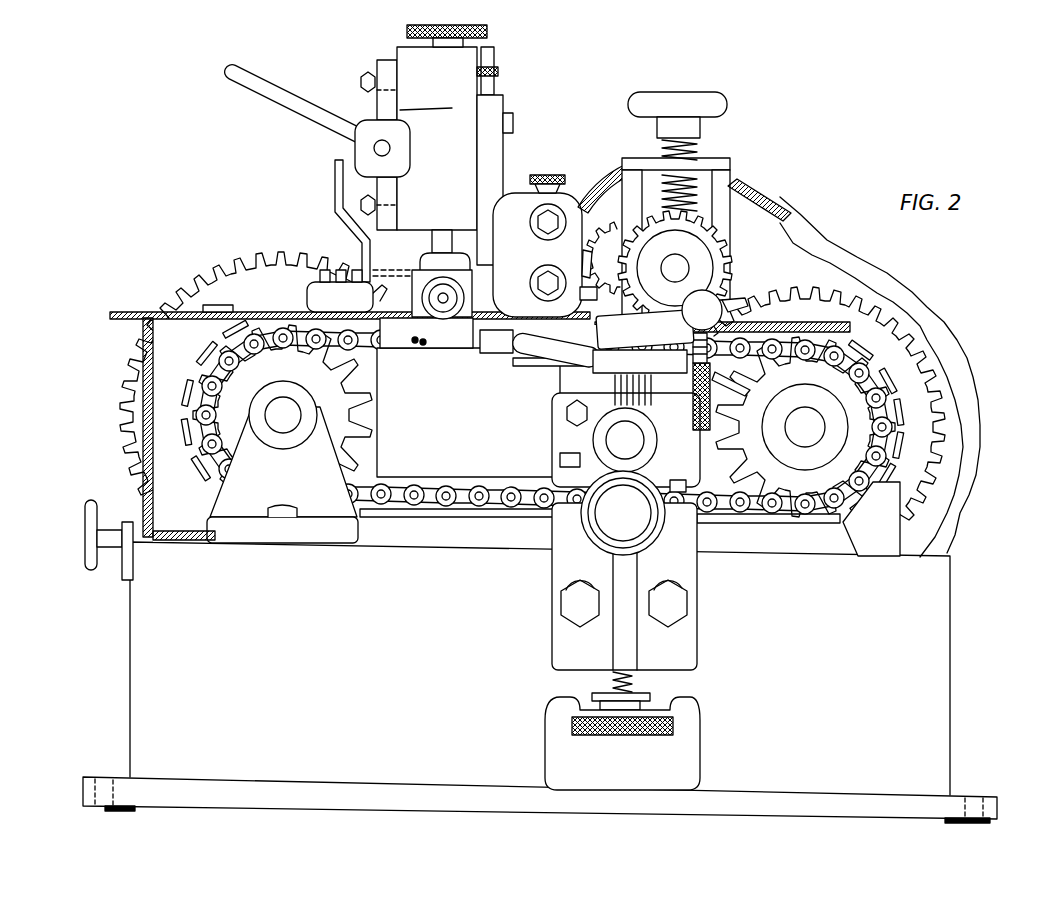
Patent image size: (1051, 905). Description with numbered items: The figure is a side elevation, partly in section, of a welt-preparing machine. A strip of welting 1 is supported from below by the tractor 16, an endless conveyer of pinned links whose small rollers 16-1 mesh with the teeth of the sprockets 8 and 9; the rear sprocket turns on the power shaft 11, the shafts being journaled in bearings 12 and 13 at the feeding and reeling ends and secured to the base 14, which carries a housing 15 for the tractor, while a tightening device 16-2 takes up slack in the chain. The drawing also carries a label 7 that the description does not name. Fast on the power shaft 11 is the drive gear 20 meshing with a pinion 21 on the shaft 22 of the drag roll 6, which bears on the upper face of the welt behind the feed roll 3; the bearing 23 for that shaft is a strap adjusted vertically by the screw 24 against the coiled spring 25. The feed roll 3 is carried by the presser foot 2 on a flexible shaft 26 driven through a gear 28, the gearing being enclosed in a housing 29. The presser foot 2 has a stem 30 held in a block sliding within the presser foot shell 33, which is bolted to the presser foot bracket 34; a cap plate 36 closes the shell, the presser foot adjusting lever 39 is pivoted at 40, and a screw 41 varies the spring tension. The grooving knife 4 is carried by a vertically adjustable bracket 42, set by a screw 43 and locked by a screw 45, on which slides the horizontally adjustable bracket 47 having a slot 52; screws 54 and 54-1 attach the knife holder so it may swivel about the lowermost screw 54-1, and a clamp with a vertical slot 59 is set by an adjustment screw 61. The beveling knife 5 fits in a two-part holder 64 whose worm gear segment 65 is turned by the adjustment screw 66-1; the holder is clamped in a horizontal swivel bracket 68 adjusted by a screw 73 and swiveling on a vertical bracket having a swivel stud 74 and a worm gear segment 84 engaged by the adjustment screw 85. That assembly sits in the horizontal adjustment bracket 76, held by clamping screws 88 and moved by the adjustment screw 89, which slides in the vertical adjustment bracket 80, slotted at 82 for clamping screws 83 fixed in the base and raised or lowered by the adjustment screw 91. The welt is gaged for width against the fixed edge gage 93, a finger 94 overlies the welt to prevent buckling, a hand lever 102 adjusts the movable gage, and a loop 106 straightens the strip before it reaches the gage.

The strip of welting 1 is at (131, 312).
The presser foot 2 is at (463, 335).
The feed roll 3 is at (438, 335).
The grooving knife 4 is at (543, 278).
The beveling knife 5 is at (498, 353).
The drag roll 6 is at (705, 270).
The sprocket wheel 7 is at (905, 413).
The sprocket 8 is at (237, 380).
The sprocket 9 is at (855, 395).
The power shaft 11 is at (804, 425).
The bearing 12 is at (282, 475).
The bearing 13 is at (871, 519).
The base 14 is at (540, 668).
The housing 15 is at (143, 383).
The tractor 16 is at (424, 512).
The rollers 16-1 is at (605, 421).
The tightening device 16-2 is at (84, 552).
The drive gear 20 is at (918, 453).
The pinion 21 is at (678, 267).
The shaft 22 is at (728, 246).
The bearing 23 is at (710, 193).
The screw 24 is at (723, 103).
The coiled spring 25 is at (660, 200).
The shaft 26 is at (452, 298).
The gear 28 is at (232, 295).
The housing 29 is at (767, 203).
The stem 30 is at (440, 232).
The presser foot shell 33 is at (452, 108).
The presser foot bracket 34 is at (340, 291).
The cap plate 36 is at (405, 50).
The presser foot adjusting lever 39 is at (272, 106).
The pivot 40 is at (378, 147).
The screw 41 is at (490, 32).
The bracket 42 is at (499, 147).
The screw 43 is at (497, 72).
The screw 45 is at (513, 123).
The bracket 47 is at (508, 200).
The slot 52 is at (537, 255).
The screw 54 is at (556, 205).
The screw 54-1 is at (556, 350).
The slot 59 is at (600, 260).
The adjustment screw 61 is at (583, 204).
The holder 64 is at (518, 362).
The worm gear segment 65 is at (657, 331).
The adjustment screw 66-1 is at (745, 299).
The horizontal swivel bracket 68 is at (567, 404).
The adjustment screw 73 is at (708, 410).
The swivel stud 74 is at (625, 440).
The horizontal adjustment bracket 76 is at (650, 455).
The vertical adjustment bracket 80 is at (677, 643).
The slot 82 is at (672, 583).
The clamping screws 83 is at (672, 605).
The worm gear segment 84 is at (612, 372).
The adjustment screw 85 is at (743, 387).
The clamping screws 88 is at (558, 457).
The adjustment screw 89 is at (662, 520).
The adjustment screw 91 is at (648, 735).
The fixed edge gage 93 is at (405, 360).
The finger 94 is at (396, 276).
The hand lever 102 is at (335, 172).
The loop 106 is at (215, 309).